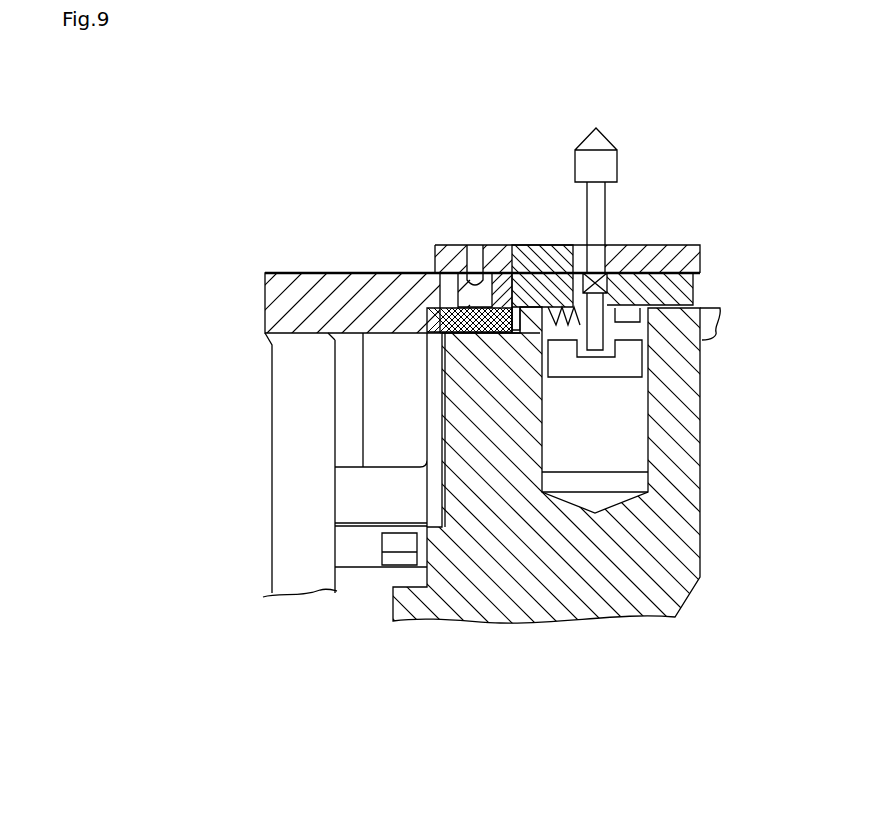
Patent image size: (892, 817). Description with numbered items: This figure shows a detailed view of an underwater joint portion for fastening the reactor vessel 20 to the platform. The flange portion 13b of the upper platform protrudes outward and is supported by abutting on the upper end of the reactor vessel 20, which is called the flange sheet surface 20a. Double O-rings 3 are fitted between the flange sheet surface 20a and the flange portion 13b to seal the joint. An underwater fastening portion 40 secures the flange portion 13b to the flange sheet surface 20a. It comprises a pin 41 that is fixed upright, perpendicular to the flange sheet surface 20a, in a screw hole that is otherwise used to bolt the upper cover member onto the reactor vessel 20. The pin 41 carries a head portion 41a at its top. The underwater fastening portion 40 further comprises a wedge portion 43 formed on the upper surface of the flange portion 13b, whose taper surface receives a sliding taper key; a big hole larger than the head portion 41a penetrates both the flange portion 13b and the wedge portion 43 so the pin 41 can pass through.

The double O-rings 3 is at (478, 335).
The flange portion 13b is at (402, 290).
The reactor vessel 20 is at (660, 540).
The flange sheet surface 20a is at (708, 346).
The underwater fastening portion 40 is at (616, 271).
The pin 41 is at (538, 201).
The head portion 41a is at (578, 146).
The wedge portion 43 is at (684, 254).